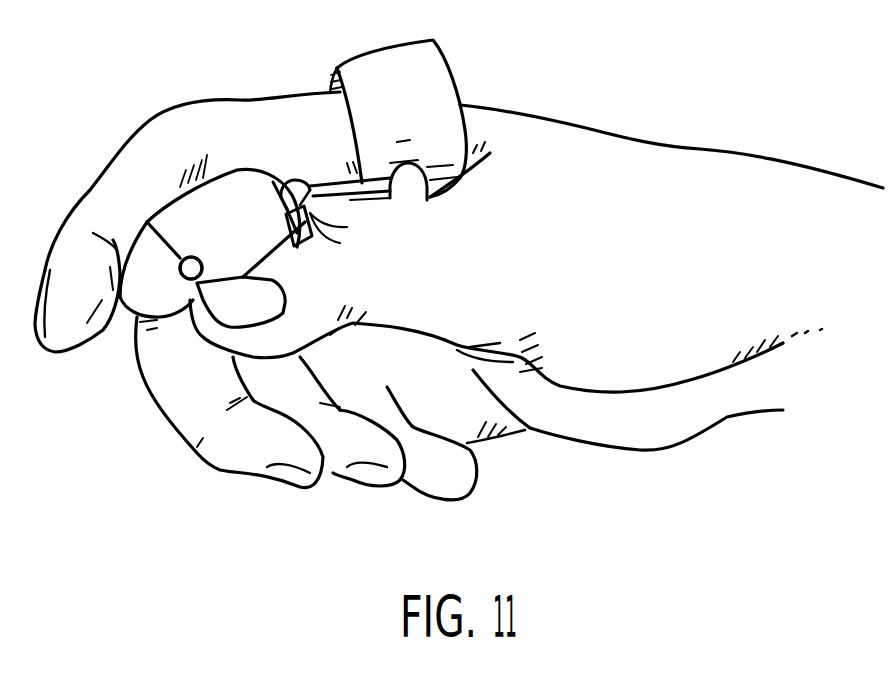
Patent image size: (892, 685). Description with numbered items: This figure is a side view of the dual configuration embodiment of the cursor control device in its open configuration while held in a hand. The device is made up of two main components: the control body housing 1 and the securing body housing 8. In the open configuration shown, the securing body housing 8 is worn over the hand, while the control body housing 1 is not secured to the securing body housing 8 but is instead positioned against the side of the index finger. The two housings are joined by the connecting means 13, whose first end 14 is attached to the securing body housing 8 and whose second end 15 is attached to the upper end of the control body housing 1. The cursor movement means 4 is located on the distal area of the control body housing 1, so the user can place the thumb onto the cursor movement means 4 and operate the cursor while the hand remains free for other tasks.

The control body housing 1 is at (225, 200).
The cursor movement means 4 is at (147, 222).
The securing body housing 8 is at (433, 90).
The connecting means 13 is at (310, 180).
The first end 14 is at (411, 193).
The second end 15 is at (293, 210).